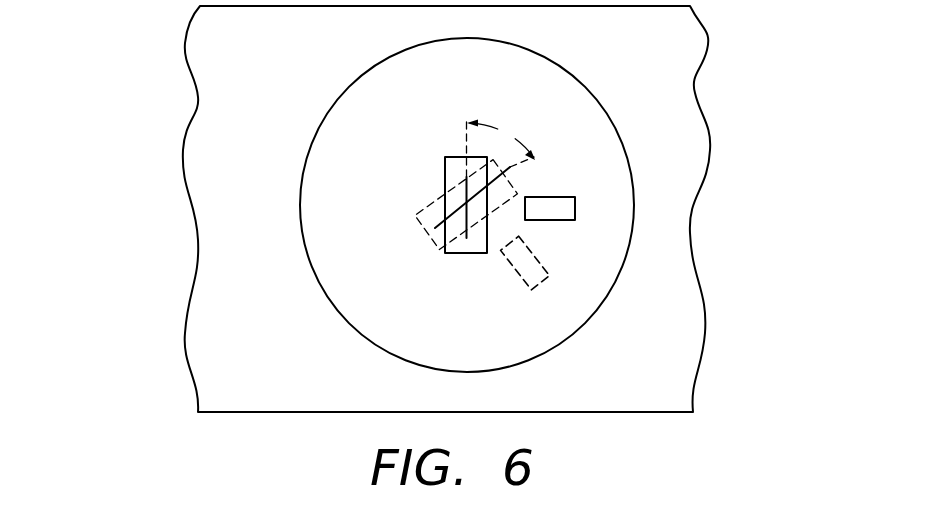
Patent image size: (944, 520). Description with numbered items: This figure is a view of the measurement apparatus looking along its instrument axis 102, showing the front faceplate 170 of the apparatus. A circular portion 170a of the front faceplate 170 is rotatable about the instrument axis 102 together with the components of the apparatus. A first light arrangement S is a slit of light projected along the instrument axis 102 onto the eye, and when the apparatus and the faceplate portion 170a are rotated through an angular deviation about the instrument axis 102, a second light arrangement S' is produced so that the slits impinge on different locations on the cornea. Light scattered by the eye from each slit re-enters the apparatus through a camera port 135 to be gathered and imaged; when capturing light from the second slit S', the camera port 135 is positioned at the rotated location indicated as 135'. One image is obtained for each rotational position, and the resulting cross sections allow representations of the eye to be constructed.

The front faceplate 170 is at (193, 116).
The portion of the front faceplate 170a is at (353, 82).
The instrument axis 102 is at (467, 207).
The camera port 135 is at (607, 179).
The camera port position 135' is at (585, 290).
The first light arrangement S is at (428, 157).
The second light arrangement S' is at (402, 210).